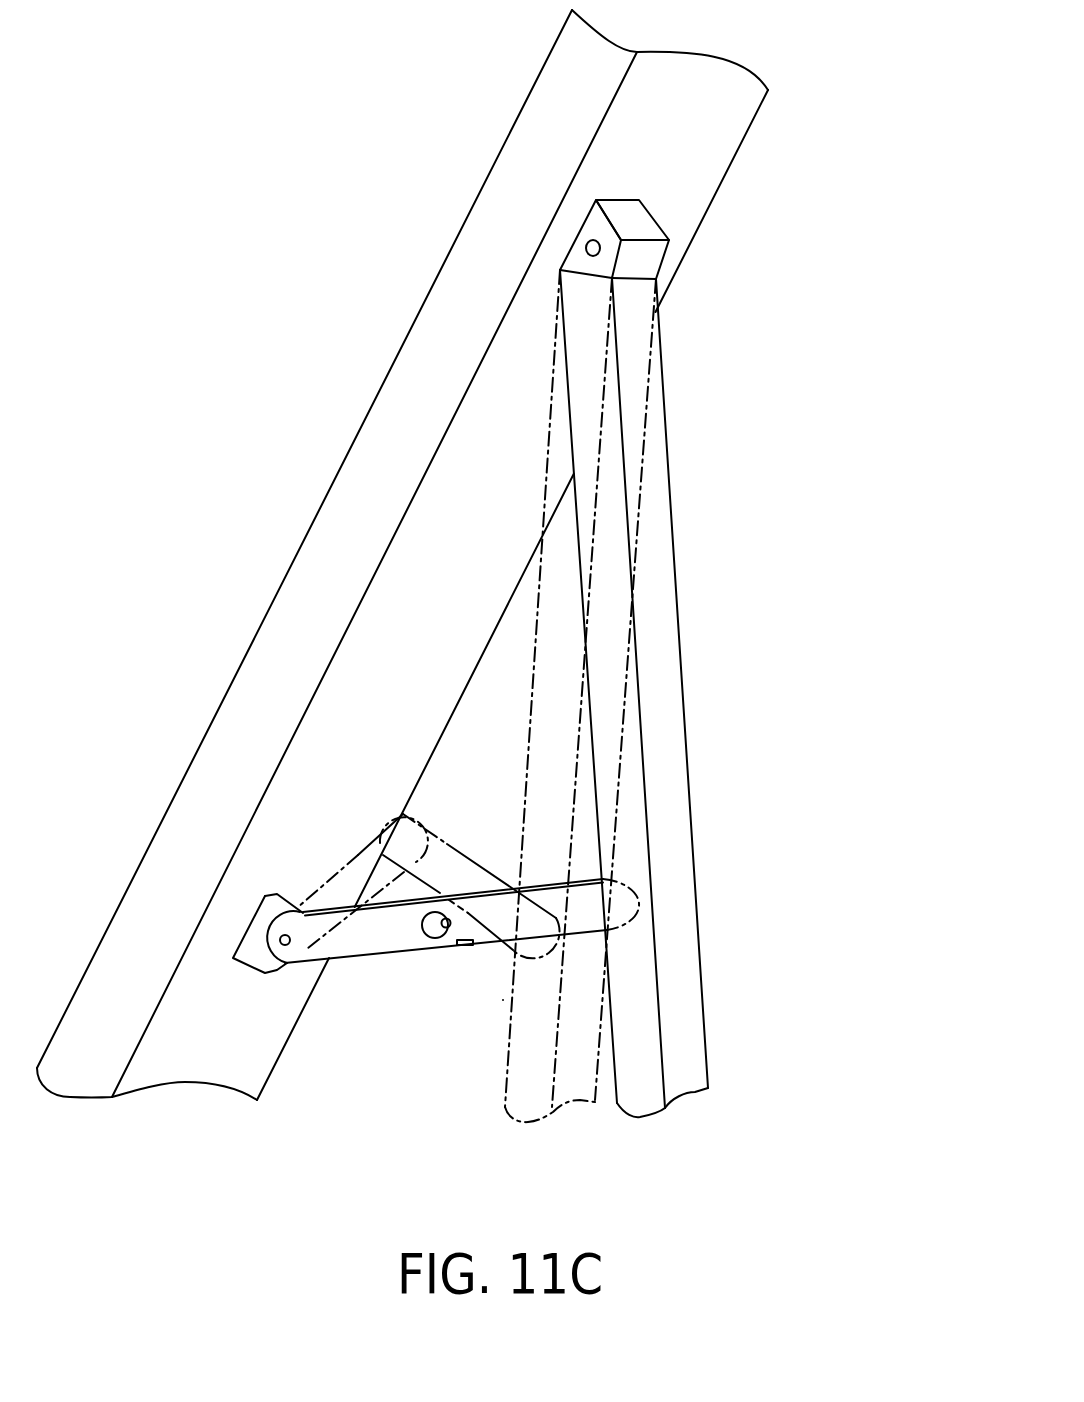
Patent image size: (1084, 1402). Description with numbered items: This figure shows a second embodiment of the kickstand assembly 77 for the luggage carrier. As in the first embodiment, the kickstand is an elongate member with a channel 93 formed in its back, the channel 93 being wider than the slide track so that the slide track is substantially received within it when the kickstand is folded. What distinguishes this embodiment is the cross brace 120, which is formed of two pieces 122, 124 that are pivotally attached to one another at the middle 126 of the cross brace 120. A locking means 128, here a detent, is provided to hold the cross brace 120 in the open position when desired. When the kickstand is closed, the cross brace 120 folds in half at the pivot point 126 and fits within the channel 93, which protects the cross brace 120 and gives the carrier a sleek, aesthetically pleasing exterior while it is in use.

The kickstand assembly 77 is at (688, 1008).
The channel 93 is at (653, 595).
The cross brace 120 is at (362, 937).
The piece 122 is at (313, 963).
The piece 124 is at (582, 927).
The middle / pivot point 126 is at (447, 930).
The locking means 128 is at (477, 933).